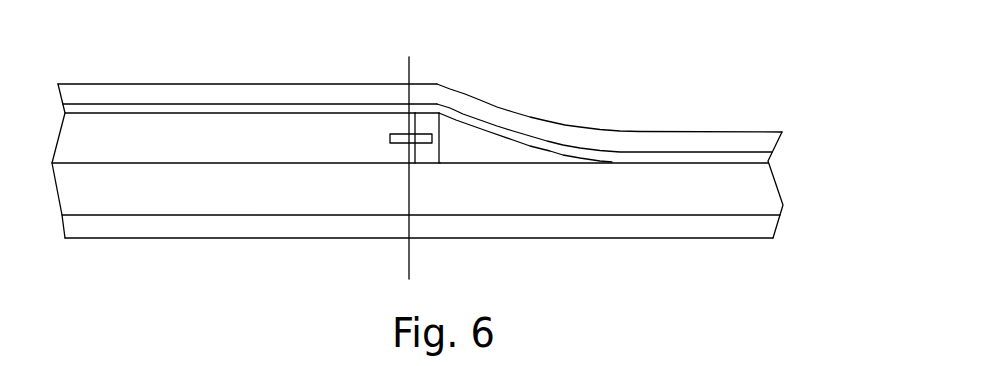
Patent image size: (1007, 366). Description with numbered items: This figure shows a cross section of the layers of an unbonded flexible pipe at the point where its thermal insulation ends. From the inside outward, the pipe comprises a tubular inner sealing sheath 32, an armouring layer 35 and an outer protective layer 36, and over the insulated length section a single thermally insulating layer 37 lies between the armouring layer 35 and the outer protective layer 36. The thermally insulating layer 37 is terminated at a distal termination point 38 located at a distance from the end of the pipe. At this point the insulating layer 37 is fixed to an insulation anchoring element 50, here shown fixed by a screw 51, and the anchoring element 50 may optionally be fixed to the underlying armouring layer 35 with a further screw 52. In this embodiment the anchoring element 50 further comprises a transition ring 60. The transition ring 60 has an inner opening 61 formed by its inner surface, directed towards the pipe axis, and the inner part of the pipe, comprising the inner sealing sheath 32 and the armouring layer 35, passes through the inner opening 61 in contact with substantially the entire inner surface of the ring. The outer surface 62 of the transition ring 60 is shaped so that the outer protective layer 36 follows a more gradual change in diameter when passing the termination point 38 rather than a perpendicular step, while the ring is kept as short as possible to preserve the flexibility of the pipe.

The inner sealing sheath 32 is at (648, 225).
The armouring layer 35 is at (748, 203).
The outer protective layer 36 is at (678, 145).
The thermally insulating layer 37 is at (185, 143).
The distal termination point 38 is at (408, 255).
The insulation anchoring element 50 is at (425, 122).
The screw 51 is at (390, 136).
The screw 52 is at (427, 165).
The transition ring 60 is at (485, 142).
The inner opening 61 is at (527, 164).
The outer surface 62 is at (560, 150).